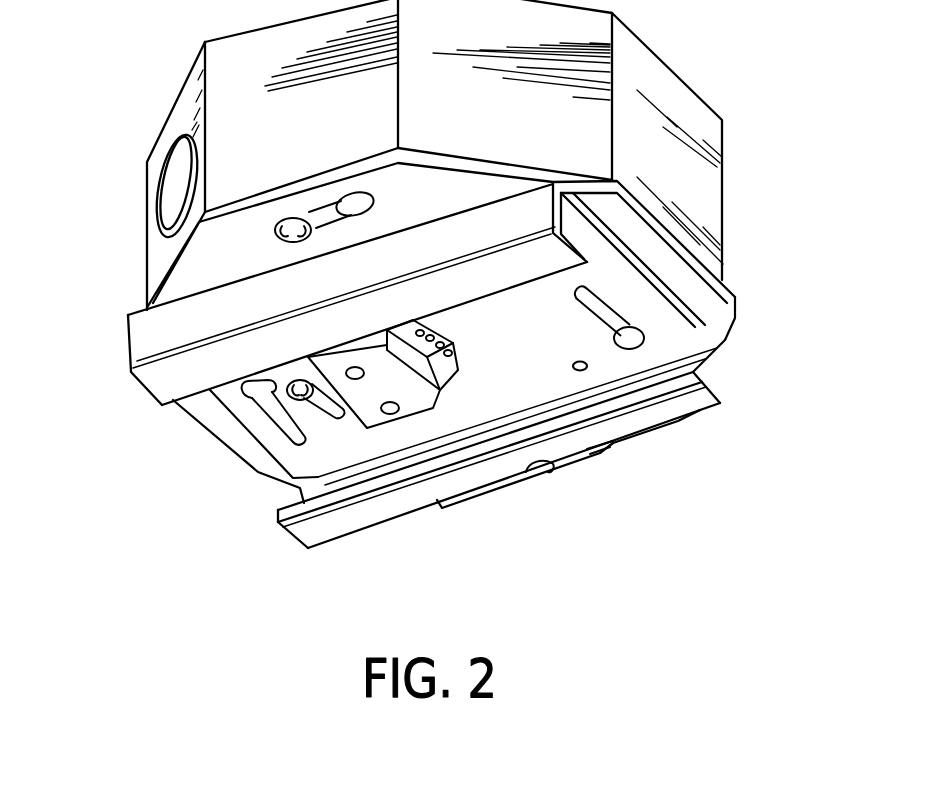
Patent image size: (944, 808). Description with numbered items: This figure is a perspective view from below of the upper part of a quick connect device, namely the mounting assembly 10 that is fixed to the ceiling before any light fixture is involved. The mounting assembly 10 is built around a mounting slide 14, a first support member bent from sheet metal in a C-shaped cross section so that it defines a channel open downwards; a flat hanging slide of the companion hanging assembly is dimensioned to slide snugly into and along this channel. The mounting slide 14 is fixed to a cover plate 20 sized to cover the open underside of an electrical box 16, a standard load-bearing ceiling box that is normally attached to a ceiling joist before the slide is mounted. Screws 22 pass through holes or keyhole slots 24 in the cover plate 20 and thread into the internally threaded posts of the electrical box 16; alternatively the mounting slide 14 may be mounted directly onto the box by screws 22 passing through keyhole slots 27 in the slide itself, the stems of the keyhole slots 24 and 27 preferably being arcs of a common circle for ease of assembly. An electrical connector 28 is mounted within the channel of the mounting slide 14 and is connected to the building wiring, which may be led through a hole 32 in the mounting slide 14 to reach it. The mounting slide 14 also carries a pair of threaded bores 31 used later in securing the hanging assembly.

The mounting assembly 10 is at (722, 455).
The mounting slide 14 is at (283, 490).
The electrical box 16 is at (695, 195).
The cover plate 20 is at (218, 250).
The screws 22 is at (293, 223).
The keyhole slots 24 is at (360, 198).
The keyhole slots 27 is at (627, 312).
The electrical connector 28 is at (333, 373).
The threaded bores 31 is at (454, 400).
The hole 32 is at (262, 396).